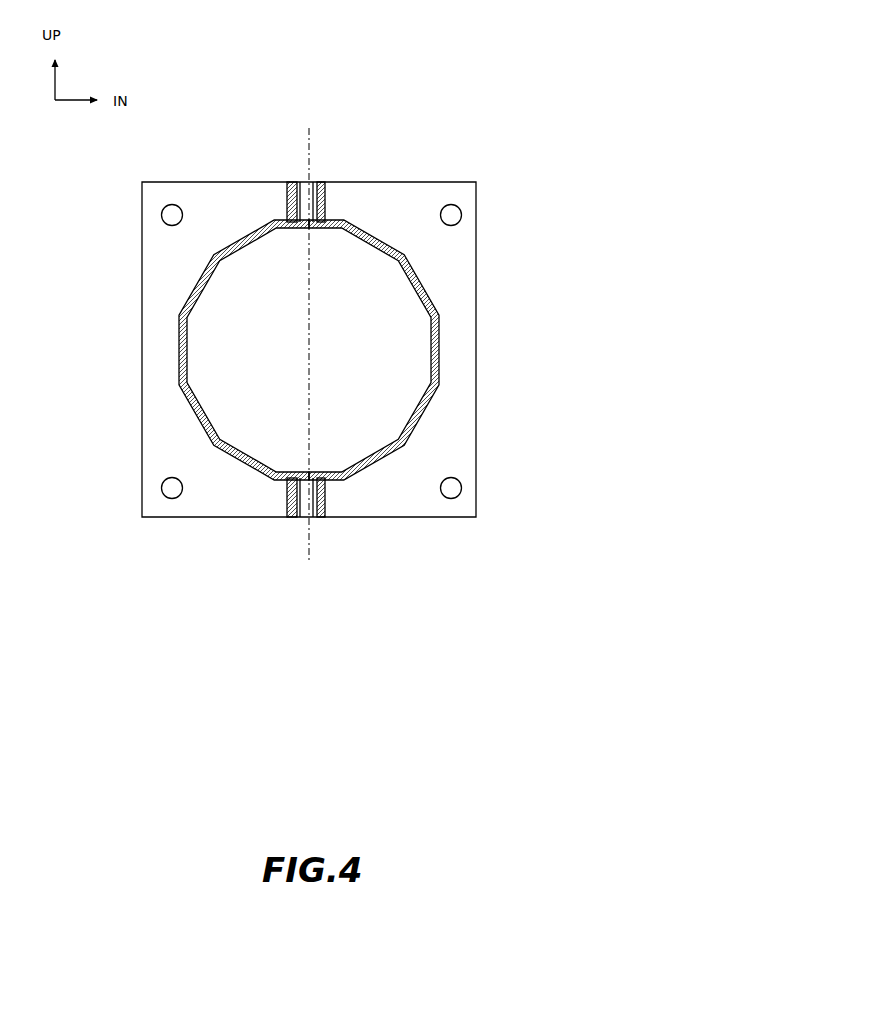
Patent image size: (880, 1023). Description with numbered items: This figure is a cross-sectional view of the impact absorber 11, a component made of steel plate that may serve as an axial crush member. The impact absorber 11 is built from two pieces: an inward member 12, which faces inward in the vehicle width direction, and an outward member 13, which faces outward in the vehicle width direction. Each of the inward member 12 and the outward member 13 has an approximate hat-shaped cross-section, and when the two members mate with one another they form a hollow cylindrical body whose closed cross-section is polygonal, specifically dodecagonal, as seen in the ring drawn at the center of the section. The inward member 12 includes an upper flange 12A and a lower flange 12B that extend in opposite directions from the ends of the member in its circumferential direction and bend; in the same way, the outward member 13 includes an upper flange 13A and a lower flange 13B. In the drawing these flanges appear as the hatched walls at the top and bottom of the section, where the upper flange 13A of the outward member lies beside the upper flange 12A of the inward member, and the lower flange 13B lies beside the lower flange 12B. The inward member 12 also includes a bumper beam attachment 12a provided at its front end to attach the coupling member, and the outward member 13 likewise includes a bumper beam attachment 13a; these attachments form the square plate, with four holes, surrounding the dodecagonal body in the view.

The impact absorber 11 is at (484, 110).
The inward member 12 is at (482, 281).
The bumper beam attachment 12a is at (455, 440).
The upper flange 12A is at (318, 197).
The lower flange 12B is at (318, 500).
The outward member 13 is at (136, 253).
The bumper beam attachment 13a is at (155, 447).
The upper flange 13A is at (287, 197).
The lower flange 13B is at (289, 500).